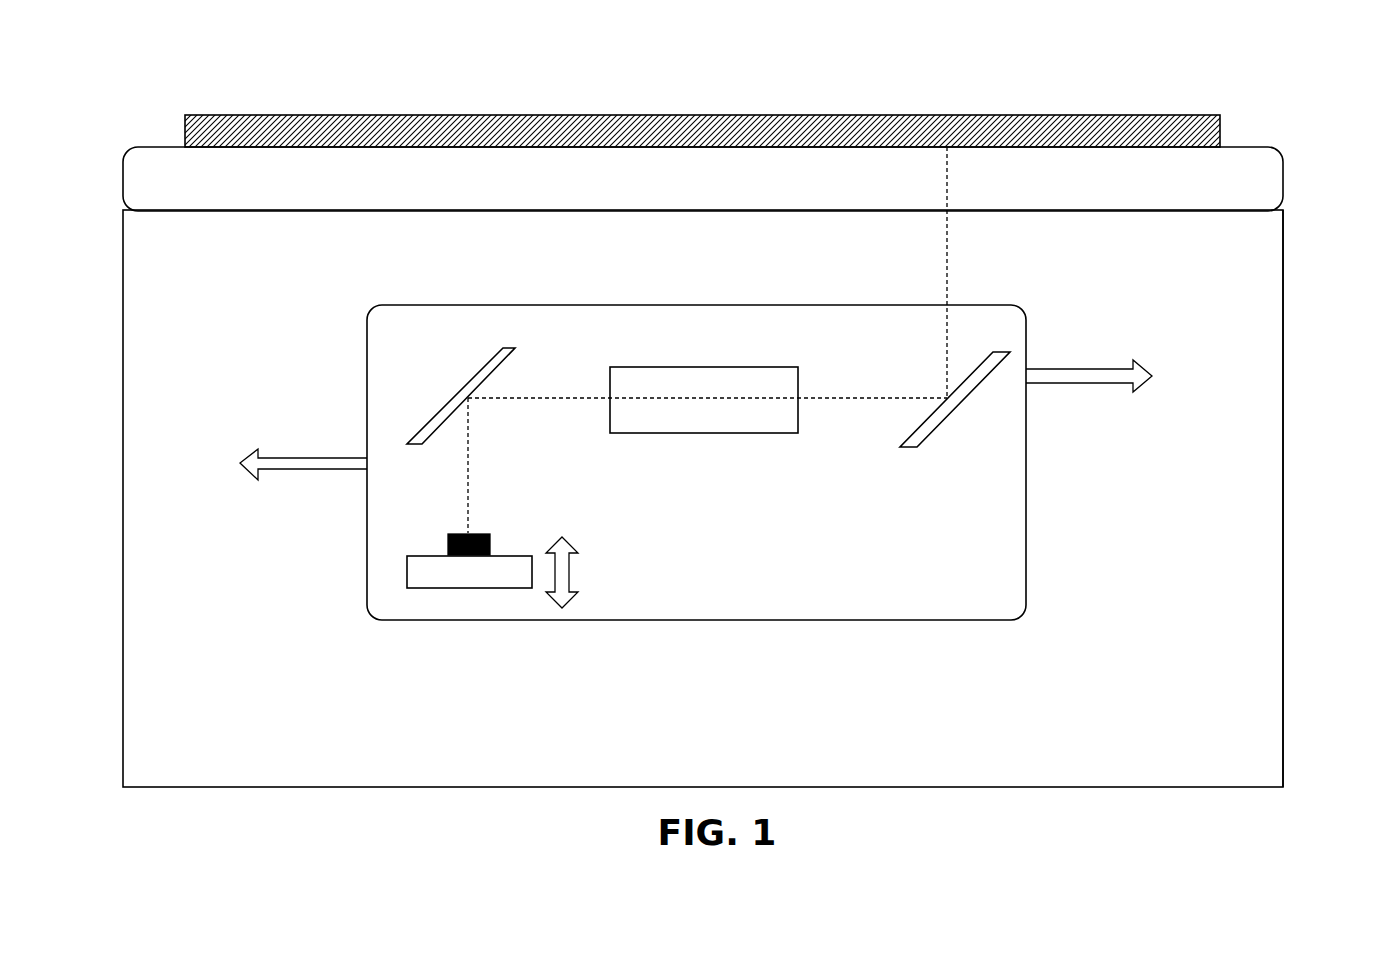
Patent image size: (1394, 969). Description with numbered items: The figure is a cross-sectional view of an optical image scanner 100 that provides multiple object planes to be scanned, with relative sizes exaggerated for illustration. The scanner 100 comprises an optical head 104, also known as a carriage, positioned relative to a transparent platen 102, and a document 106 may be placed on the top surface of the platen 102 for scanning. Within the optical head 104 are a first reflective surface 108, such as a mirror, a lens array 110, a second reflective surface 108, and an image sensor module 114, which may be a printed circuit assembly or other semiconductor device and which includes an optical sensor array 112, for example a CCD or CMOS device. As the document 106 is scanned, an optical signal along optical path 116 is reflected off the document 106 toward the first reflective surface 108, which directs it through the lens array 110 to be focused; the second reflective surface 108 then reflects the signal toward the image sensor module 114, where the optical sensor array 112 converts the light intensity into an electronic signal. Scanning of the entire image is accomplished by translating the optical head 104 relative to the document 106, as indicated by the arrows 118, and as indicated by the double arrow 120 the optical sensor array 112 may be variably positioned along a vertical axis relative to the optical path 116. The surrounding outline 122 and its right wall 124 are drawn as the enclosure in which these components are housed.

The optical image scanner 100 is at (1232, 85).
The transparent platen 102 is at (1283, 183).
The optical head 104 is at (1026, 466).
The document 106 is at (1062, 115).
The reflective surface 108 is at (440, 408).
The lens array 110 is at (743, 433).
The optical sensor array 112 is at (490, 543).
The image sensor module 114 is at (435, 615).
The optical path 116 is at (915, 252).
The translation of the optical head 118 is at (310, 458).
The variable positioning of the optical sensor array 120 is at (569, 572).
The chamber 122 is at (123, 311).
The chamber wall 124 is at (1283, 438).